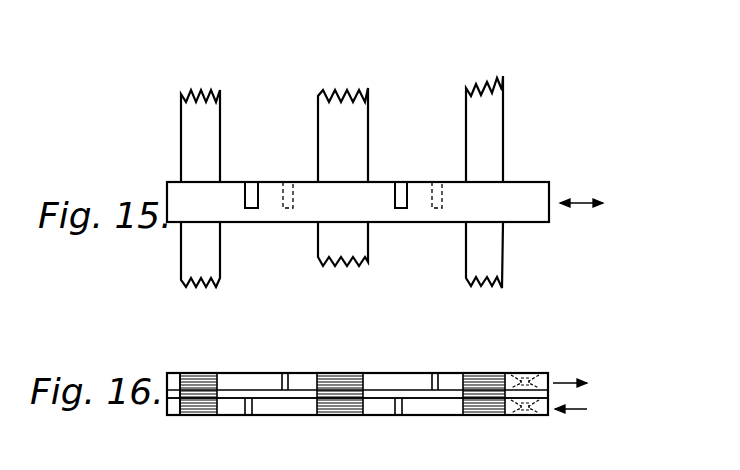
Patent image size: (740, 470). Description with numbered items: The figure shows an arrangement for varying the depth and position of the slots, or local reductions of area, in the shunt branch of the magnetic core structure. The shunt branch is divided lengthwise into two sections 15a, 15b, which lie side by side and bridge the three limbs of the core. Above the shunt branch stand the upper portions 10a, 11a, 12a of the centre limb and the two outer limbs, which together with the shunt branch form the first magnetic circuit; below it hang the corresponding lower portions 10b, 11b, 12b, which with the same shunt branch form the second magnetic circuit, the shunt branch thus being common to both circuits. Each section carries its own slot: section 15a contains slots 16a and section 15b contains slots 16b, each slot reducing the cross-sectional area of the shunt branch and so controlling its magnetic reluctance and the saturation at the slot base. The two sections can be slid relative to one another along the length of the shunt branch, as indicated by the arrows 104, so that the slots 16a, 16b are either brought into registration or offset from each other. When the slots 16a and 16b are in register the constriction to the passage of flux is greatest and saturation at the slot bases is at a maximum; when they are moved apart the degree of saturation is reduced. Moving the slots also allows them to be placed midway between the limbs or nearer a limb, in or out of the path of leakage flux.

In FIG. 15, the upper portion of main centre limb 10a is at (362, 112).
In FIG. 16, the upper portion of main centre limb 10a is at (338, 380).
In FIG. 15, the lower portion of main centre limb 10b is at (362, 258).
In FIG. 15, the upper portion of outer limb 11a is at (187, 106).
In FIG. 16, the upper portion of outer limb 11a is at (196, 376).
In FIG. 15, the lower portion of outer limb 11b is at (183, 272).
In FIG. 15, the upper portion of outer limb 12a is at (489, 108).
In FIG. 16, the upper portion of outer limb 12a is at (484, 378).
In FIG. 15, the lower portion of outer limb 12b is at (498, 260).
In FIG. 16, the shunt branch section 15a is at (384, 380).
In FIG. 15, the shunt branch section 15b is at (524, 194).
In FIG. 16, the shunt branch section 15b is at (374, 413).
In FIG. 15, the slot 16a is at (438, 182).
In FIG. 16, the slot 16a is at (434, 372).
In FIG. 15, the slot 16b is at (401, 182).
In FIG. 16, the slot 16b is at (399, 416).
In FIG. 16, the arrows 104 is at (595, 378).